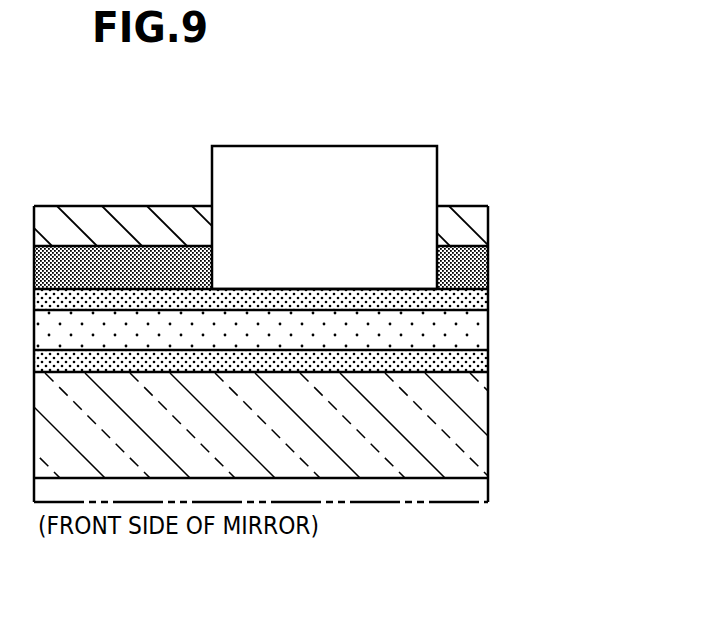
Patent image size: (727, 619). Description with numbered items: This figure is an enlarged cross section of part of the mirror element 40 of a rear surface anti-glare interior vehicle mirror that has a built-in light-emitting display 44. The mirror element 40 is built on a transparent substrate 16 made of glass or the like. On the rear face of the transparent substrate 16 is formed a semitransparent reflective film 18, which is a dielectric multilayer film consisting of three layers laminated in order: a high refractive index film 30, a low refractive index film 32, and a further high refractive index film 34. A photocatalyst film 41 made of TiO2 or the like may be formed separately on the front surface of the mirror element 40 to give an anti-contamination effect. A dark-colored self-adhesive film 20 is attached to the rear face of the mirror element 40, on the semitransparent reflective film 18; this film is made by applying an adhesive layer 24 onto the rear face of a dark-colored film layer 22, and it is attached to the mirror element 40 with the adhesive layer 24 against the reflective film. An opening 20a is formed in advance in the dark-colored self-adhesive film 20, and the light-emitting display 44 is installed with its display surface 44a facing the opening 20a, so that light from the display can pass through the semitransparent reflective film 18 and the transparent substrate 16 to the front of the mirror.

The transparent substrate 16 is at (305, 426).
The semitransparent reflective film 18 is at (320, 338).
The dark-colored self-adhesive film 20 is at (335, 248).
The opening 20a is at (437, 227).
The dark-colored film layer 22 is at (465, 226).
The adhesive layer 24 is at (464, 264).
The high refractive index film 30 is at (291, 369).
The low refractive index film 32 is at (479, 331).
The high refractive index film 34 is at (481, 295).
The mirror element 40 is at (328, 384).
The photocatalyst film 41 is at (382, 503).
The light-emitting display 44 is at (308, 195).
The display surface 44a is at (313, 290).